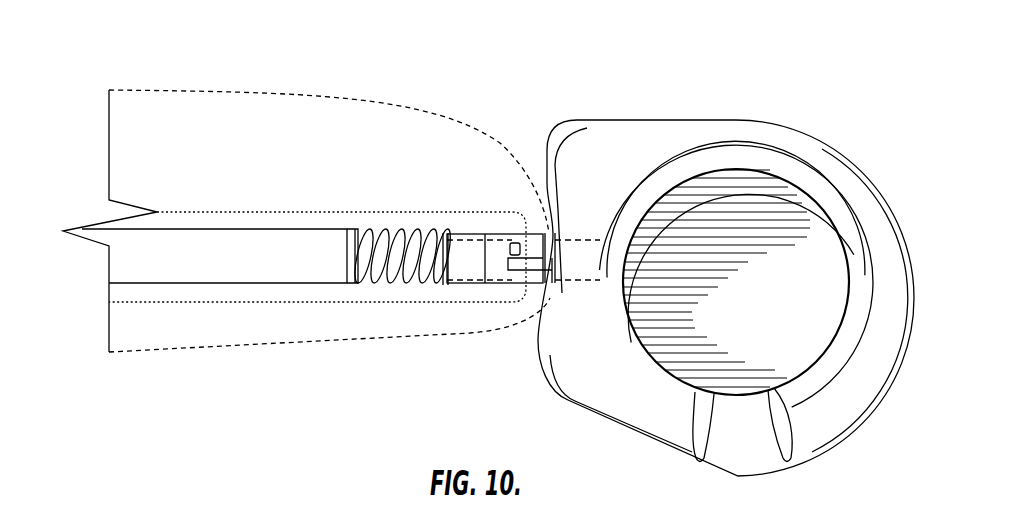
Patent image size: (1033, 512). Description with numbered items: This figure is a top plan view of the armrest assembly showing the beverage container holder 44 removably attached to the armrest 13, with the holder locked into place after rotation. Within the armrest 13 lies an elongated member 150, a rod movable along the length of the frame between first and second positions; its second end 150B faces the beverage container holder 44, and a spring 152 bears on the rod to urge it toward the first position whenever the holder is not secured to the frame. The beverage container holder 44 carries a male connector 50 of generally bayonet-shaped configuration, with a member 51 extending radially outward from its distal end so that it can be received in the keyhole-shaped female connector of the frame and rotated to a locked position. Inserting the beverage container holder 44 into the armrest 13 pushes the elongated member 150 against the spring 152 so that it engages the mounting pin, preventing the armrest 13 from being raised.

The armrest 13 is at (207, 90).
The beverage container holder 44 is at (717, 120).
The male connector 50 is at (548, 268).
The member 51 is at (510, 255).
The elongated member 150 is at (227, 248).
The second end 150B is at (363, 230).
The spring 152 is at (408, 230).